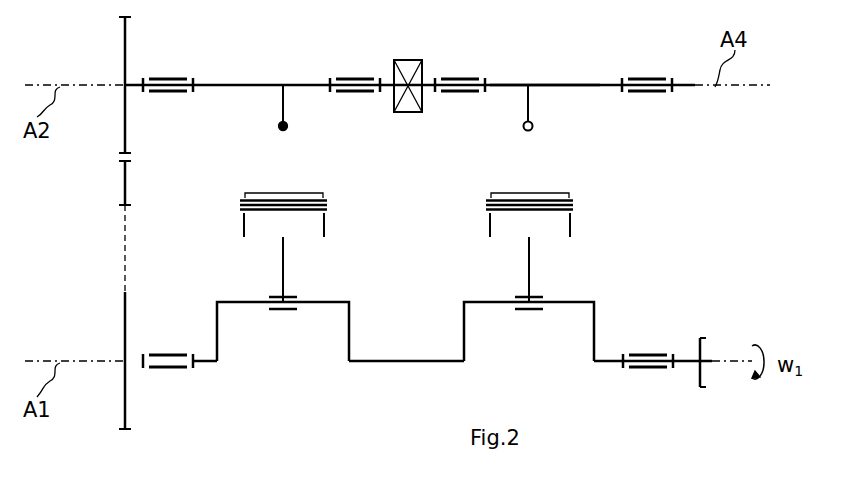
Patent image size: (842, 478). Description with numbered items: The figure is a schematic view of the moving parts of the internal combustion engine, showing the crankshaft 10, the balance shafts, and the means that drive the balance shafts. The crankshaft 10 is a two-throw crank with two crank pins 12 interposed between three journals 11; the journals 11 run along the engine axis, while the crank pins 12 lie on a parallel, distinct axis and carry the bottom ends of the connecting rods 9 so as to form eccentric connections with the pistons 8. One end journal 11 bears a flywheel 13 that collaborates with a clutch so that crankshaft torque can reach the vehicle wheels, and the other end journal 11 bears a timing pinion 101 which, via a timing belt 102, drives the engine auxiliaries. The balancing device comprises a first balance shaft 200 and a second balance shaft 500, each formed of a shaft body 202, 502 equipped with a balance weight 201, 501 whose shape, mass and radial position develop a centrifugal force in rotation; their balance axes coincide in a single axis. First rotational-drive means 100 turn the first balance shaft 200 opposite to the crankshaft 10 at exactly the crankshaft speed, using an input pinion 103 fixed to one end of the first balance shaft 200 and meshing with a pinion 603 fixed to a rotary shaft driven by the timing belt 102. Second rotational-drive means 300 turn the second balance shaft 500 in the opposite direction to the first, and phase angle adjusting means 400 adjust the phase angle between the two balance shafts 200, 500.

The piston 8 is at (316, 193).
The connecting rod 9 is at (284, 277).
The crankshaft 10 is at (680, 356).
The journal 11 is at (217, 363).
The crank pin 12 is at (338, 303).
The flywheel 13 is at (700, 386).
The first rotational-drive means 100 is at (125, 222).
The timing pinion 101 is at (125, 403).
The timing belt 102 is at (125, 242).
The input pinion 103 is at (125, 125).
The first balance shaft 200 is at (302, 84).
The balance weight 201 is at (283, 107).
The shaft body 202 is at (230, 83).
The second rotational-drive means 300 is at (433, 40).
The phase angle adjusting means 400 is at (408, 86).
The second balance shaft 500 is at (605, 84).
The balance weight 501 is at (528, 105).
The shaft body 502 is at (505, 83).
The pinion 603 is at (127, 172).